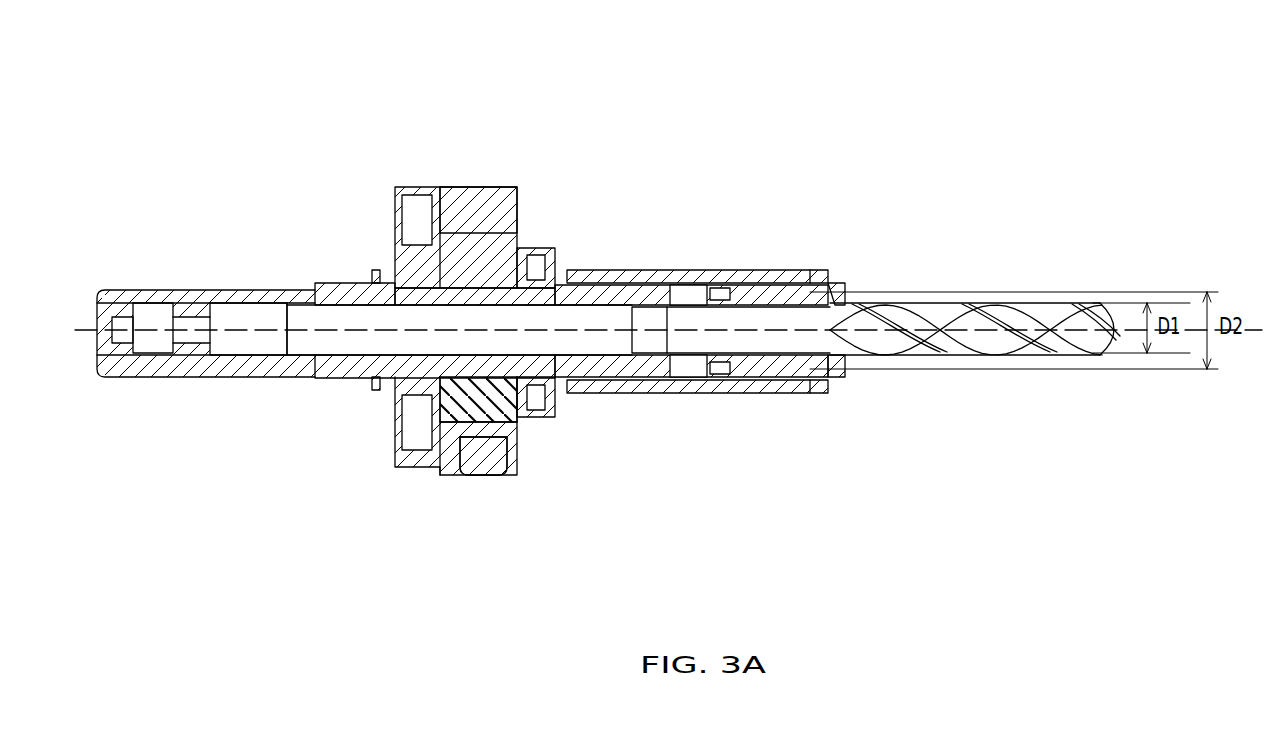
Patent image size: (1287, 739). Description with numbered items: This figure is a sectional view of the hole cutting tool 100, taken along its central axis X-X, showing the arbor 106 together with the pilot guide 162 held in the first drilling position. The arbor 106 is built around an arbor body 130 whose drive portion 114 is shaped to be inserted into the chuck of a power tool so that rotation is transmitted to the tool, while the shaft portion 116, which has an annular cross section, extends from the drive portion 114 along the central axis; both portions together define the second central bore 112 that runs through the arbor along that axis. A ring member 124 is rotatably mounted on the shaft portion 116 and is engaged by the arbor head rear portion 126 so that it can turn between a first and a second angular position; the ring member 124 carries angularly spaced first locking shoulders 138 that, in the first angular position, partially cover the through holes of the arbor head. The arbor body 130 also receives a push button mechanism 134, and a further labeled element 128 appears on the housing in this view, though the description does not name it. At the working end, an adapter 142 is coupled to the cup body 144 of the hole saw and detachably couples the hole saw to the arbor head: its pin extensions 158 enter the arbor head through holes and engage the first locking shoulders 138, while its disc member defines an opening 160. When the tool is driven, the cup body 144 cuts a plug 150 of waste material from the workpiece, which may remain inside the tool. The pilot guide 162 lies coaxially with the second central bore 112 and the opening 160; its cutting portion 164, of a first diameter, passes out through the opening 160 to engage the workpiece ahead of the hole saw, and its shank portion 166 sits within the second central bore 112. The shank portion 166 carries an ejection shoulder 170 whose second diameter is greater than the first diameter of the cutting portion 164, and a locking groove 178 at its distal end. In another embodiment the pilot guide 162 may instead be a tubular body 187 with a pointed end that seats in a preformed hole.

The hole cutting tool 100 is at (888, 153).
The arbor 106 is at (95, 382).
The second central bore 112 is at (182, 370).
The drive portion 114 is at (312, 284).
The shaft portion 116 is at (420, 365).
The ring member 124 is at (418, 463).
The arbor head rear portion 126 is at (438, 250).
The housing side wall 128 is at (518, 207).
The arbor body 130 is at (487, 203).
The push button mechanism 134 is at (492, 468).
The first locking shoulders 138 is at (414, 217).
The adapter 142 is at (553, 447).
The cup body 144 is at (803, 273).
The plug 150 is at (695, 380).
The pin extensions 158 is at (512, 390).
The opening 160 is at (513, 417).
The pilot guide 162 is at (867, 290).
The cutting portion 164 is at (802, 338).
The shank portion 166 is at (323, 380).
The ejection shoulder 170 is at (696, 280).
The locking groove 178 is at (192, 318).
The tubular body 187 is at (830, 292).